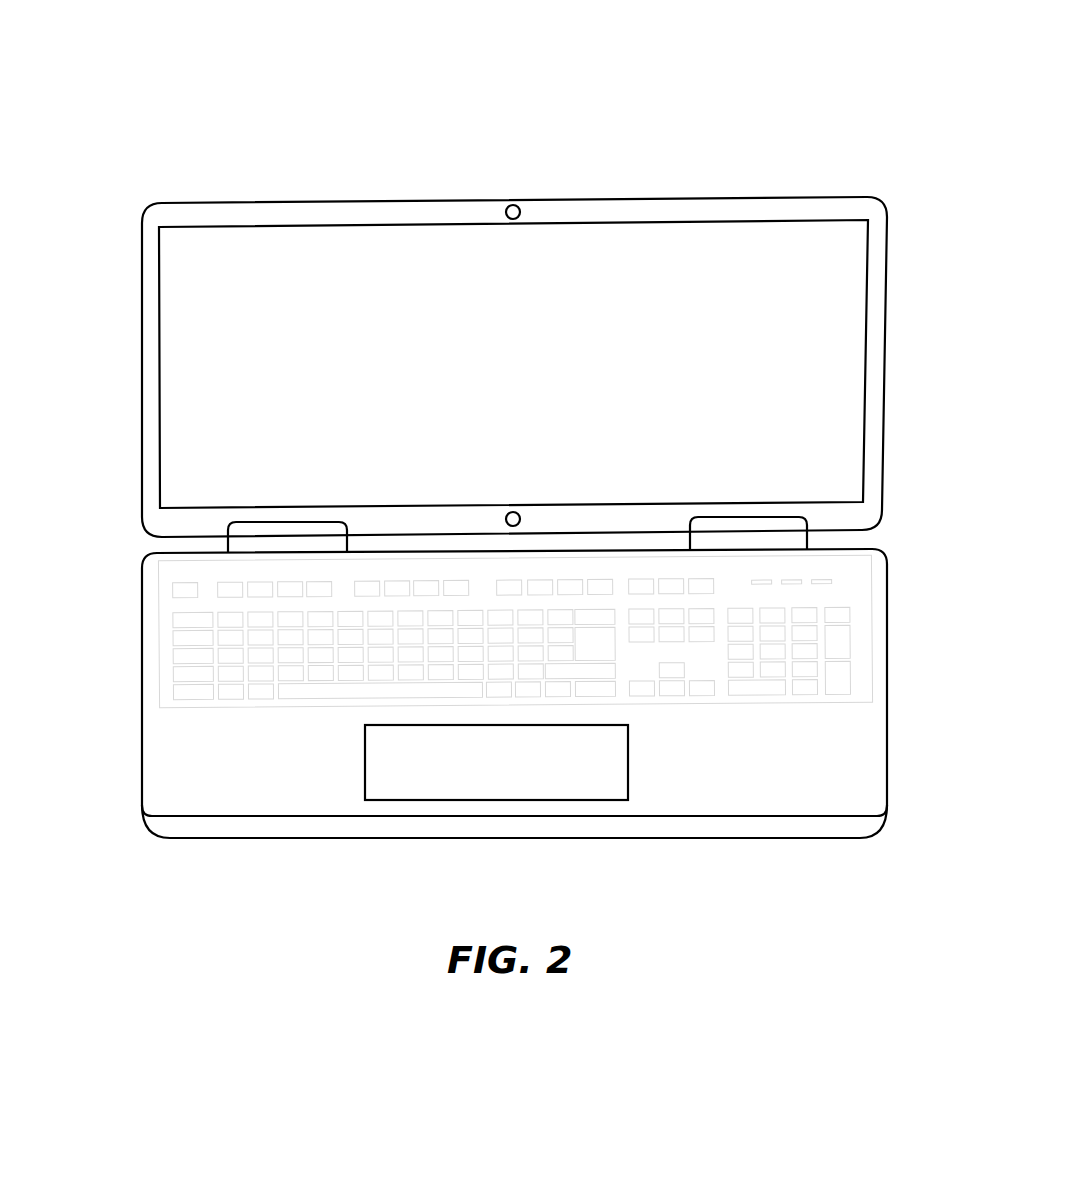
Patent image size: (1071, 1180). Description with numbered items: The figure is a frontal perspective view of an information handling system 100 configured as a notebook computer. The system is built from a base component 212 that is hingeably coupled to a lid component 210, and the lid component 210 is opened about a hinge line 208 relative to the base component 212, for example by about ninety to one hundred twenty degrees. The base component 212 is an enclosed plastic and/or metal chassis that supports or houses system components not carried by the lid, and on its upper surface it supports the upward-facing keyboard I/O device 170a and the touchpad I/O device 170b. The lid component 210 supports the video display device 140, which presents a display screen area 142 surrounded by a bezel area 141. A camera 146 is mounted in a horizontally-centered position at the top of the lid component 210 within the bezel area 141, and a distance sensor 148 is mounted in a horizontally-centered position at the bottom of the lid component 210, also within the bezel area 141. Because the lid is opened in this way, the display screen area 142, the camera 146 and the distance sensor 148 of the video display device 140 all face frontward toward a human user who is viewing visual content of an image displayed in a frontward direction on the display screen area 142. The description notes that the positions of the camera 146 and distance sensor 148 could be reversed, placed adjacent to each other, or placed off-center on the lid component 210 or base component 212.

The information handling system 100 is at (665, 127).
The video display device 140 is at (145, 213).
The bezel area 141 is at (400, 210).
The display screen area 142 is at (327, 276).
The camera 146 is at (518, 207).
The distance sensor 148 is at (520, 518).
The keyboard I/O device 170a is at (495, 648).
The touchpad I/O device 170b is at (590, 762).
The hinge line 208 is at (857, 539).
The lid component 210 is at (115, 223).
The base component 212 is at (108, 575).